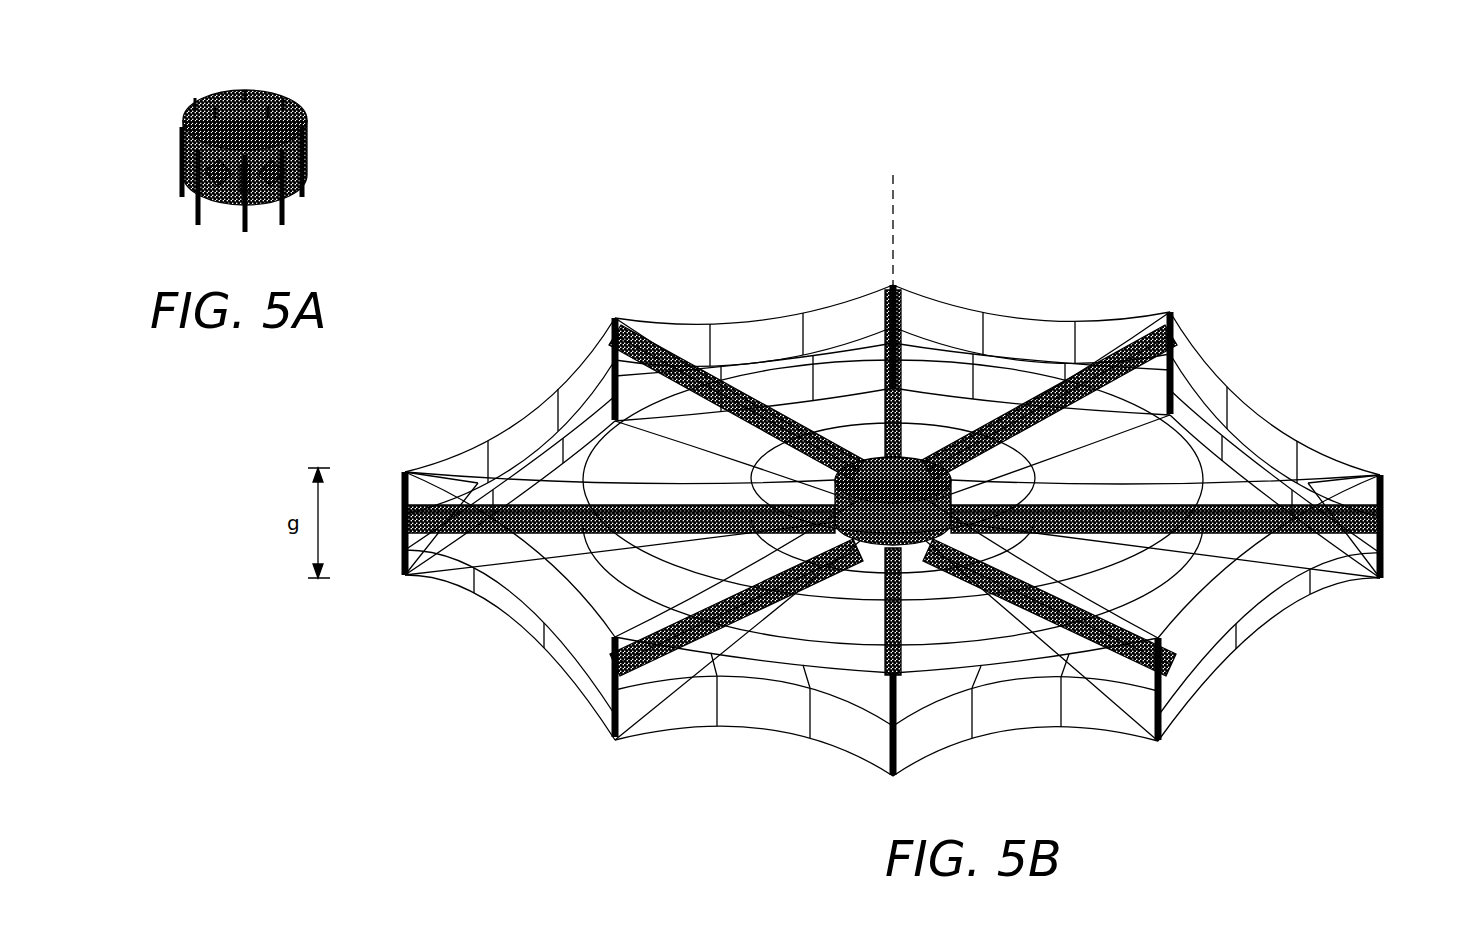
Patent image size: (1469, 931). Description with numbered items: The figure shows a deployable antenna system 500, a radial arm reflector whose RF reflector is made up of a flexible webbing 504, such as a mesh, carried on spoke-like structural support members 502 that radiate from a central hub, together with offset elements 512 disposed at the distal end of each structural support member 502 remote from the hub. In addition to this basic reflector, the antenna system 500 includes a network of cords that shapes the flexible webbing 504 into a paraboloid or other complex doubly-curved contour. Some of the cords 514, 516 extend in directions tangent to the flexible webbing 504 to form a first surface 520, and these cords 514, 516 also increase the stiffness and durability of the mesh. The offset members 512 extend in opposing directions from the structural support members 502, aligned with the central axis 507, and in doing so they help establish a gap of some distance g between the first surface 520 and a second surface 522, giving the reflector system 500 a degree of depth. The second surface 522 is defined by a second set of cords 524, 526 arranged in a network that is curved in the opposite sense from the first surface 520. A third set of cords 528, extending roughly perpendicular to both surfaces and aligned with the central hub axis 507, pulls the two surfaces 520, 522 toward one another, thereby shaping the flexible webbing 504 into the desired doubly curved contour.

In FIG. 5A, the deployable antenna system 500 is at (148, 106).
In FIG. 5B, the deployable antenna system 500 is at (732, 196).
In FIG. 5A, the structural support member 502 is at (296, 178).
In FIG. 5B, the structural support member 502 is at (400, 532).
In FIG. 5A, the flexible webbing 504 is at (287, 130).
In FIG. 5B, the flexible webbing 504 is at (1040, 330).
In FIG. 5B, the central axis 507 is at (888, 192).
In FIG. 5A, the offset member 512 is at (306, 142).
In FIG. 5B, the offset member 512 is at (402, 500).
In FIG. 5B, the cord 514 is at (638, 340).
In FIG. 5B, the cord 516 is at (748, 352).
In FIG. 5B, the first surface 520 is at (580, 388).
In FIG. 5B, the second surface 522 is at (762, 770).
In FIG. 5B, the cord 524 is at (458, 585).
In FIG. 5B, the cord 526 is at (535, 640).
In FIG. 5B, the cord 528 is at (520, 606).